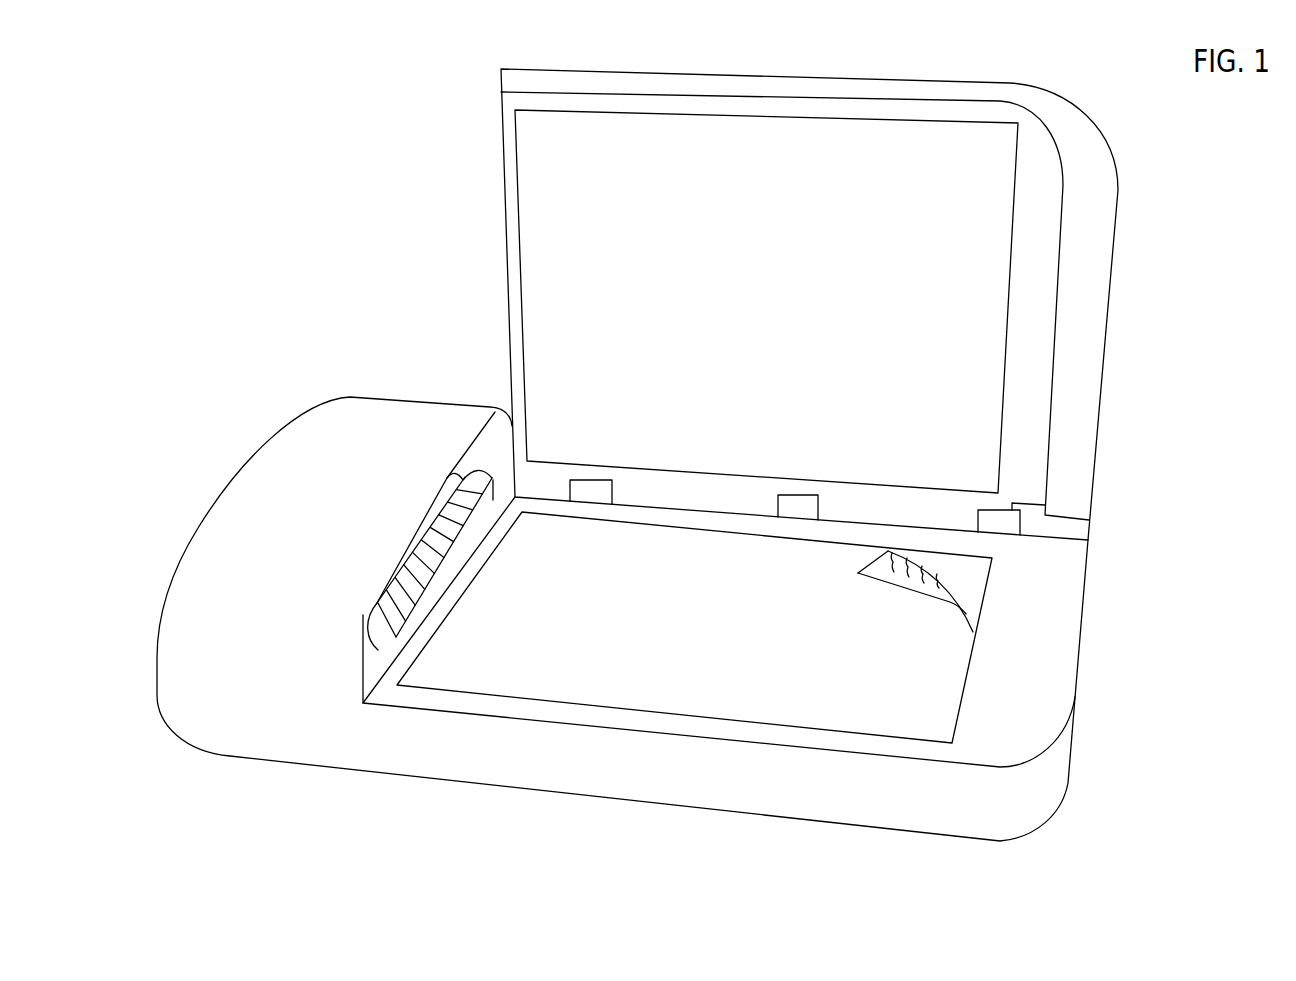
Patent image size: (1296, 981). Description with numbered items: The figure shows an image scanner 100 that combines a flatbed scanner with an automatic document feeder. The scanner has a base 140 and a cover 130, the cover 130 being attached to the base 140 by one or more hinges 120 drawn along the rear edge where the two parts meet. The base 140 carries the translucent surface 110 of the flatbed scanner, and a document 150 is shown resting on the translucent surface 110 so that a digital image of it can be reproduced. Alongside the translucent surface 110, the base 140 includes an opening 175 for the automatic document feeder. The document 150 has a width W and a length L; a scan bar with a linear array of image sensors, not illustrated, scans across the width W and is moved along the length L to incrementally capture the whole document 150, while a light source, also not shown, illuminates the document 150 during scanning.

The image scanner 100 is at (226, 235).
The translucent surface 110 is at (973, 580).
The hinges 120 is at (592, 480).
The cover 130 is at (506, 176).
The base 140 is at (1046, 822).
The document 150 is at (738, 625).
The opening 175 is at (414, 541).